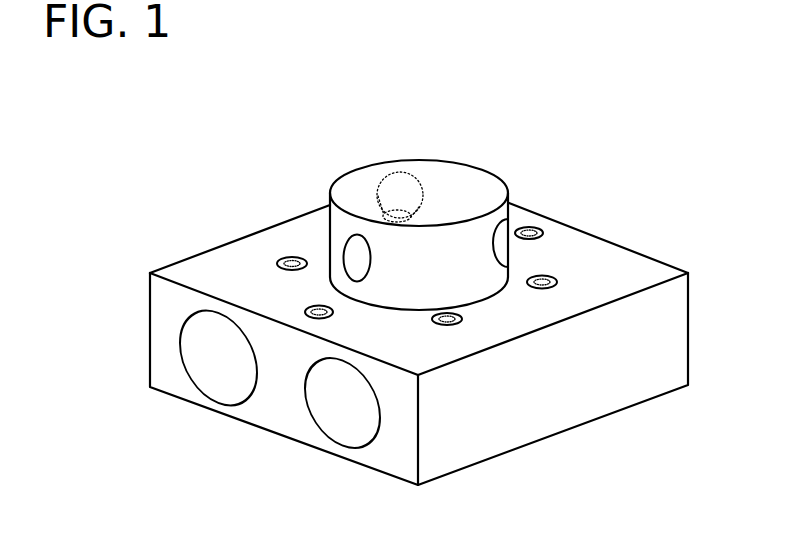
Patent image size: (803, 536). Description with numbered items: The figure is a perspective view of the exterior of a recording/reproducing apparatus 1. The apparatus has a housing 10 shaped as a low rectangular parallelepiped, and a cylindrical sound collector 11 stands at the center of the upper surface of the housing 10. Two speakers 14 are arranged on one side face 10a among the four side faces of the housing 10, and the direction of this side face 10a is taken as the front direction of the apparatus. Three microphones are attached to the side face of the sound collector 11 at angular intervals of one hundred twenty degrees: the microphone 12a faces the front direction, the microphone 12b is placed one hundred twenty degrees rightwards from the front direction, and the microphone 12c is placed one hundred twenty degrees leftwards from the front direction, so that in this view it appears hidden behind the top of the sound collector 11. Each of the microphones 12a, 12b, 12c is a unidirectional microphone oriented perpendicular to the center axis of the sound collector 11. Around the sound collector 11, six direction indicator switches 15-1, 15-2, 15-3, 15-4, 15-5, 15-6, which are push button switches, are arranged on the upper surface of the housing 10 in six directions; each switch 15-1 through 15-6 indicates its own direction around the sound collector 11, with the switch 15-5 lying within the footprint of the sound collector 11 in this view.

The recording/reproducing apparatus 1 is at (684, 148).
The housing 10 is at (628, 410).
The side face 10a is at (407, 465).
The sound collector 11 is at (498, 172).
The microphone 12a is at (352, 240).
The microphone 12b is at (510, 218).
The microphone 12c is at (410, 174).
The speaker 14 is at (210, 395).
The direction indicator switch 15-1 is at (307, 318).
The direction indicator switch 15-2 is at (453, 325).
The direction indicator switch 15-3 is at (557, 279).
The direction indicator switch 15-4 is at (541, 229).
The direction indicator switch 15-5 is at (392, 214).
The direction indicator switch 15-6 is at (283, 258).